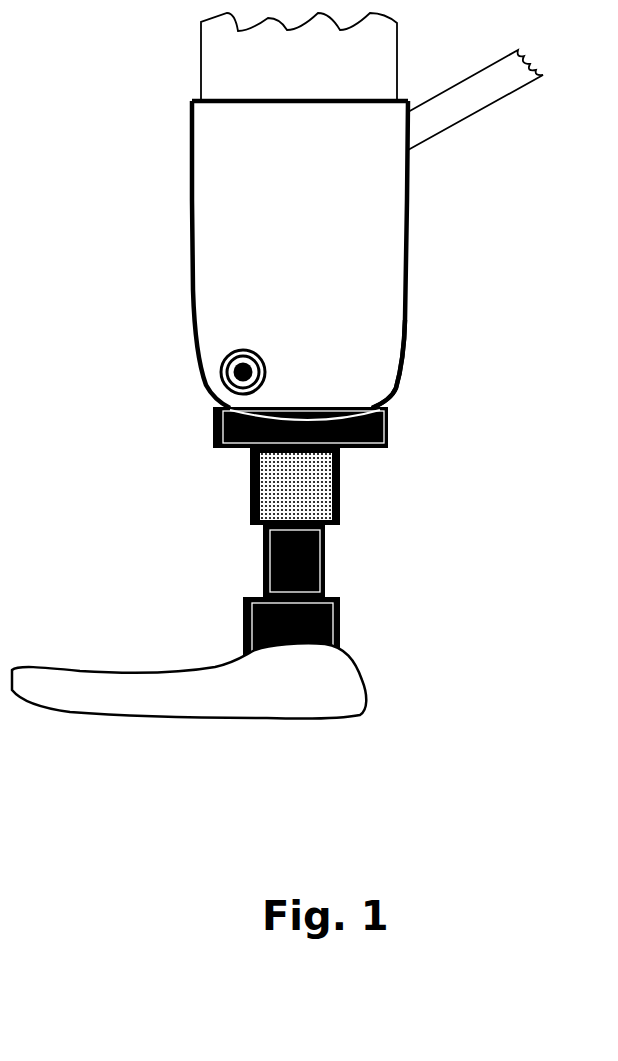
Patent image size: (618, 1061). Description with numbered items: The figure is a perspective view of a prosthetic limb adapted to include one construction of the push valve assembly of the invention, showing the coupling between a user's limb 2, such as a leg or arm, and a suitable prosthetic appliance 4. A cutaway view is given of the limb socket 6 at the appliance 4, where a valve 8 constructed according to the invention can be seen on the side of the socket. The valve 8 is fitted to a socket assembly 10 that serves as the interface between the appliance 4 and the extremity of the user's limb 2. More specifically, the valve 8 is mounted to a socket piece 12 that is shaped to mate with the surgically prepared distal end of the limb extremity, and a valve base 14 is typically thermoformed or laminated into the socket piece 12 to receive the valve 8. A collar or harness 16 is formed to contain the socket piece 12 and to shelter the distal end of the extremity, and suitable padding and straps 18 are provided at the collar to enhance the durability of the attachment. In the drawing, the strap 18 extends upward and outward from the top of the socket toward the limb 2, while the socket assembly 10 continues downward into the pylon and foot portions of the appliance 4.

The limb 2 is at (400, 65).
The straps 18 is at (472, 106).
The collar or harness 16 is at (412, 247).
The socket assembly 10 is at (407, 340).
The limb socket 6 is at (392, 392).
The valve base 14 is at (221, 354).
The valve 8 is at (217, 378).
The socket piece 12 is at (212, 399).
The prosthetic appliance 4 is at (224, 452).